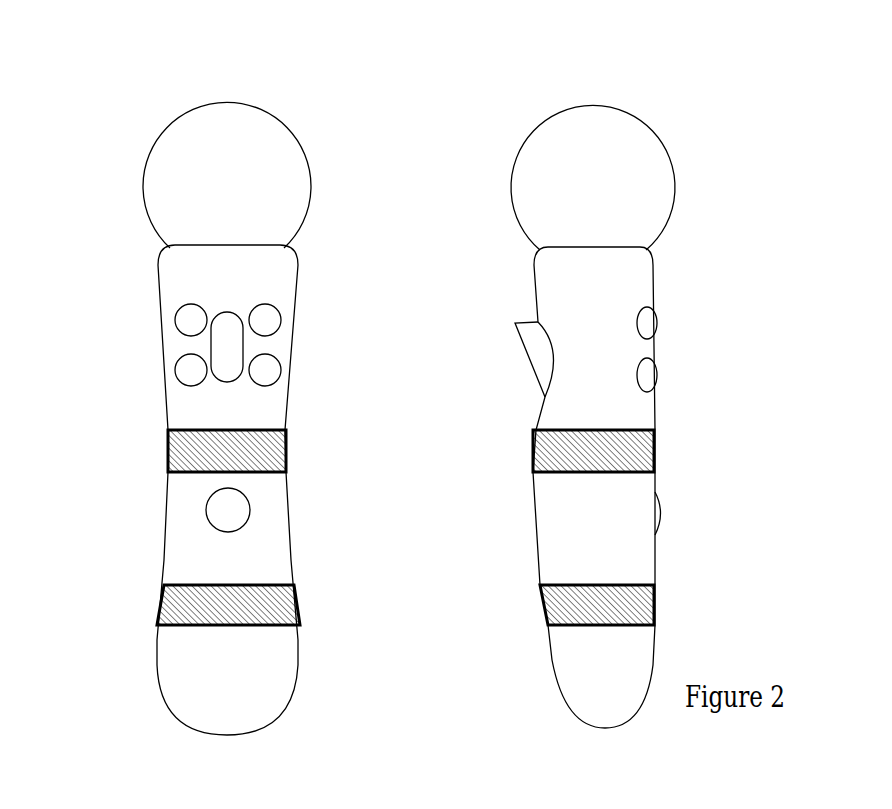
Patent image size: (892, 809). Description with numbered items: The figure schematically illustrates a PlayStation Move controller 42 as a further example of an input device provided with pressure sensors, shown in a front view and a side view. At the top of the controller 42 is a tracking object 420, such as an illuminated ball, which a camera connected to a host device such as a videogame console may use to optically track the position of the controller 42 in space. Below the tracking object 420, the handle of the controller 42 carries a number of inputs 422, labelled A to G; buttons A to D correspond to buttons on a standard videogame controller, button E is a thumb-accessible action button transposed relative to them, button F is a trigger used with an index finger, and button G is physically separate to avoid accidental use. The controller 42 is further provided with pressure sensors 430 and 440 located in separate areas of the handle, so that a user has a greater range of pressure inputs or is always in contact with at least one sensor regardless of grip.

The controller 42 is at (432, 56).
The tracking object 420 is at (493, 175).
The inputs 422 is at (478, 278).
The pressure sensor 430 is at (187, 452).
The pressure sensor 440 is at (175, 610).